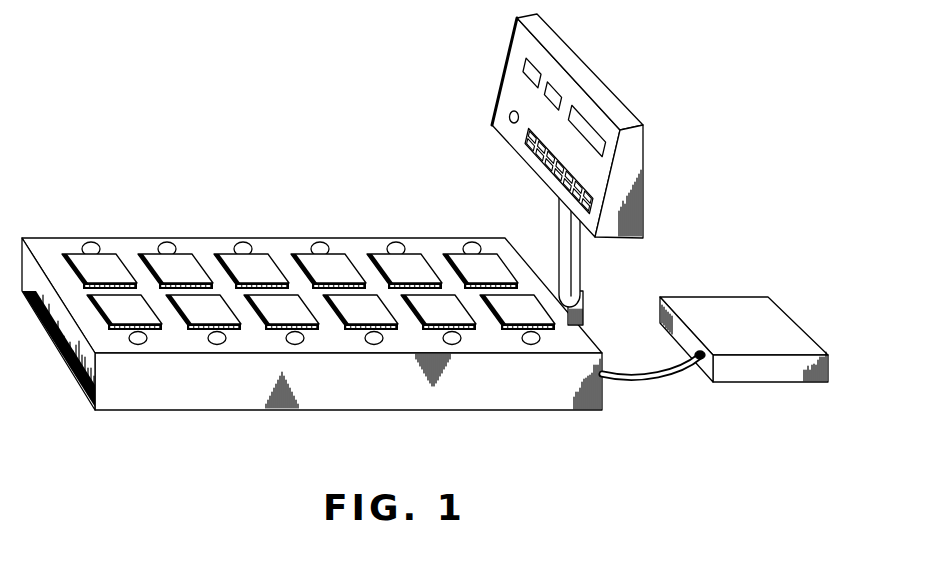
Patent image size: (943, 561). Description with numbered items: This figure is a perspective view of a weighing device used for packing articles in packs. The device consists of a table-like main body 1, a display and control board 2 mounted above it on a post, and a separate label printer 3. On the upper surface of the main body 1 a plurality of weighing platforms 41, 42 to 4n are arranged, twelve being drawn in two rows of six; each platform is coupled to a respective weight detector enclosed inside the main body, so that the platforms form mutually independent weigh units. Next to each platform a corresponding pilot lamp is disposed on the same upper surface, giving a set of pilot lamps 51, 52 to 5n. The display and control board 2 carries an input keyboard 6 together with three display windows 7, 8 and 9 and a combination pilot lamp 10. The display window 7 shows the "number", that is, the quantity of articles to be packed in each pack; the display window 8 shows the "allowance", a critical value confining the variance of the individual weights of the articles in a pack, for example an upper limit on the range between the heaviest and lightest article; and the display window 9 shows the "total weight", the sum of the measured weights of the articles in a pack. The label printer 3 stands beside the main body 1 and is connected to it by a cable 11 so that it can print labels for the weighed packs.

The main body 1 is at (192, 393).
The display and control board 2 is at (638, 173).
The label printer 3 is at (712, 308).
The weighing platform 41 is at (77, 260).
The weighing platform 42 is at (157, 260).
The weighing platform 4n is at (512, 320).
The pilot lamp 51 is at (93, 245).
The pilot lamp 52 is at (173, 245).
The pilot lamp 5n is at (538, 346).
The input keyboard 6 is at (530, 158).
The display window 7 is at (530, 65).
The display window 8 is at (552, 95).
The display window 9 is at (582, 127).
The combination pilot lamp 10 is at (508, 117).
The cable 11 is at (655, 380).